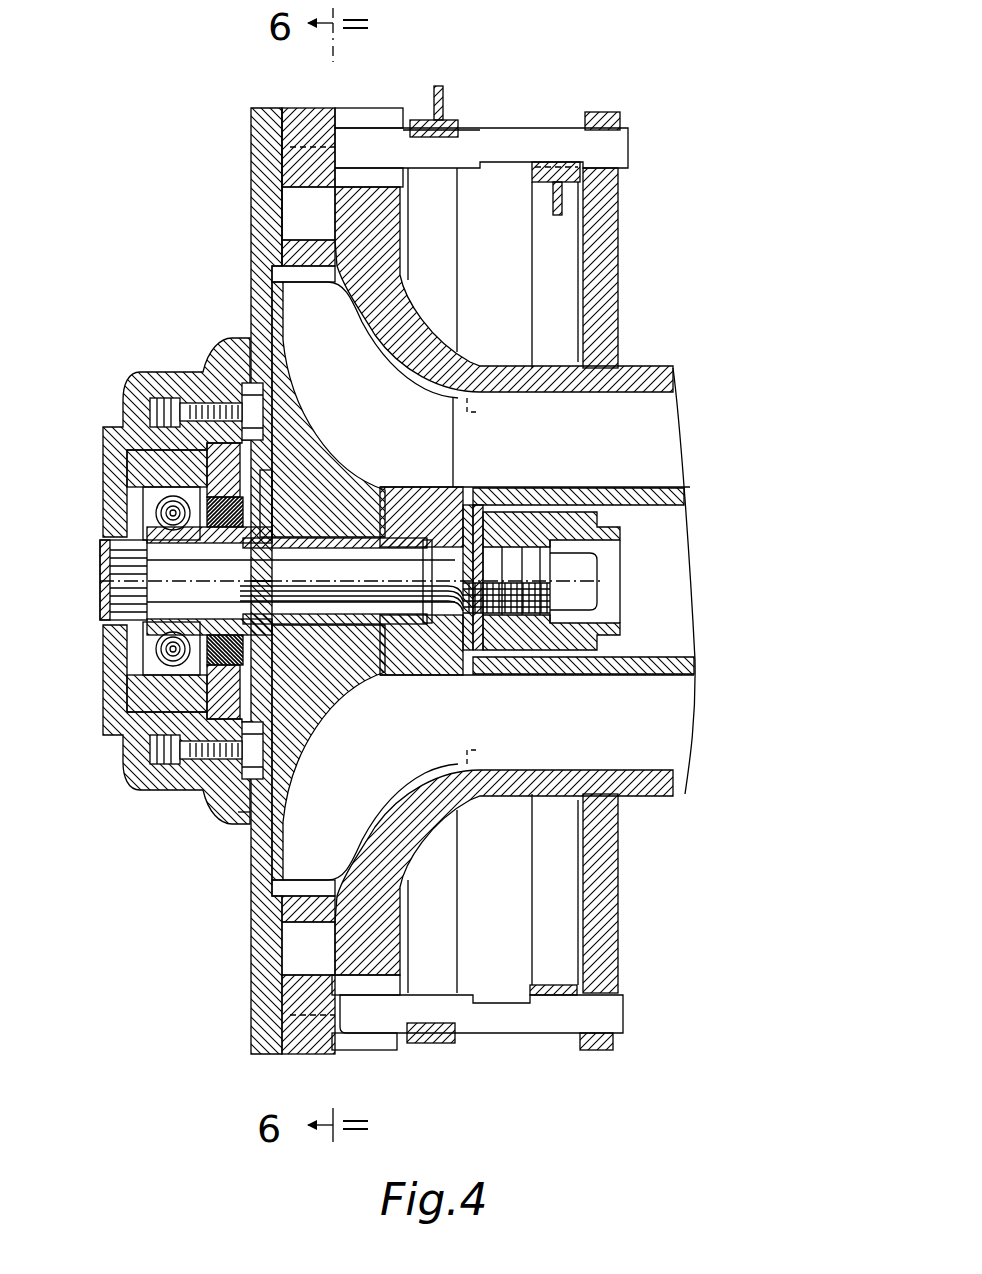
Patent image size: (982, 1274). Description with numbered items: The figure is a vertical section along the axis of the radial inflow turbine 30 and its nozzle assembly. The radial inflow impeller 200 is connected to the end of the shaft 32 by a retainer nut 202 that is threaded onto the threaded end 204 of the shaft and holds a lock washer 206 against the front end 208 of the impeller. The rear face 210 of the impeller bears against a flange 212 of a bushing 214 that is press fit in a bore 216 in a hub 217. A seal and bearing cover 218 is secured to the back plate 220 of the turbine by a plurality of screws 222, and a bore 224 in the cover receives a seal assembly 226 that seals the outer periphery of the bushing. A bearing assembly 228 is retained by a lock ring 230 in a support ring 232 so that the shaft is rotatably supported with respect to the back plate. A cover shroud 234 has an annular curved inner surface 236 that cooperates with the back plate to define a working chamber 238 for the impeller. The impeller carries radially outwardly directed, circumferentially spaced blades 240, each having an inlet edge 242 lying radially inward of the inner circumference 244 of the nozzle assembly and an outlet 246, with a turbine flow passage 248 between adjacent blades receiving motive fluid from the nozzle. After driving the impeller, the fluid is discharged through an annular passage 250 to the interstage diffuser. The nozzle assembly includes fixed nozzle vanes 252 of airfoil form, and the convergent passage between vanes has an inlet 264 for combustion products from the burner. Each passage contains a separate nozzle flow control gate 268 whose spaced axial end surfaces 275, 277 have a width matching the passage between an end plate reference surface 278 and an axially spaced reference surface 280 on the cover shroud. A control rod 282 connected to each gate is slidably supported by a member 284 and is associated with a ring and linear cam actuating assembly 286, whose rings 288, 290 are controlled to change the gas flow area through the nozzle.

The radial inflow turbine 30 is at (237, 820).
The shaft 32 is at (150, 590).
The radial inflow impeller 200 is at (388, 820).
The retainer nut 202 is at (555, 490).
The threaded end 204 is at (540, 574).
The lock washer 206 is at (505, 505).
The front end 208 is at (480, 510).
The rear face 210 is at (290, 495).
The flange 212 is at (255, 637).
The bushing 214 is at (380, 660).
The bore 216 is at (372, 495).
The hub 217 is at (475, 660).
The seal and bearing cover 218 is at (165, 735).
The back plate 220 is at (250, 872).
The screws 222 is at (195, 765).
The bore 224 is at (243, 472).
The seal assembly 226 is at (245, 545).
The bearing assembly 228 is at (160, 650).
The lock ring 230 is at (140, 493).
The support ring 232 is at (155, 420).
The cover shroud 234 is at (362, 340).
The annular curved inner surface 236 is at (400, 380).
The working chamber 238 is at (373, 342).
The blades 240 is at (362, 772).
The inlet edge 242 is at (290, 920).
The inner circumference 244 is at (300, 272).
The outlet 246 is at (503, 581).
The turbine flow passage 248 is at (255, 866).
The annular passage 250 is at (612, 405).
The fixed nozzle vanes 252 is at (300, 252).
The inlet 264 is at (312, 108).
The nozzle flow control gate 268 is at (300, 160).
The axial end surface 275 is at (282, 128).
The axial end surface 277 is at (335, 118).
The end plate reference surface 278 is at (290, 212).
The reference surface 280 is at (380, 224).
The control rod 282 is at (495, 128).
The member 284 is at (610, 218).
The ring and linear cam actuating assembly 286 is at (447, 120).
The ring 288 is at (460, 122).
The ring 290 is at (540, 185).